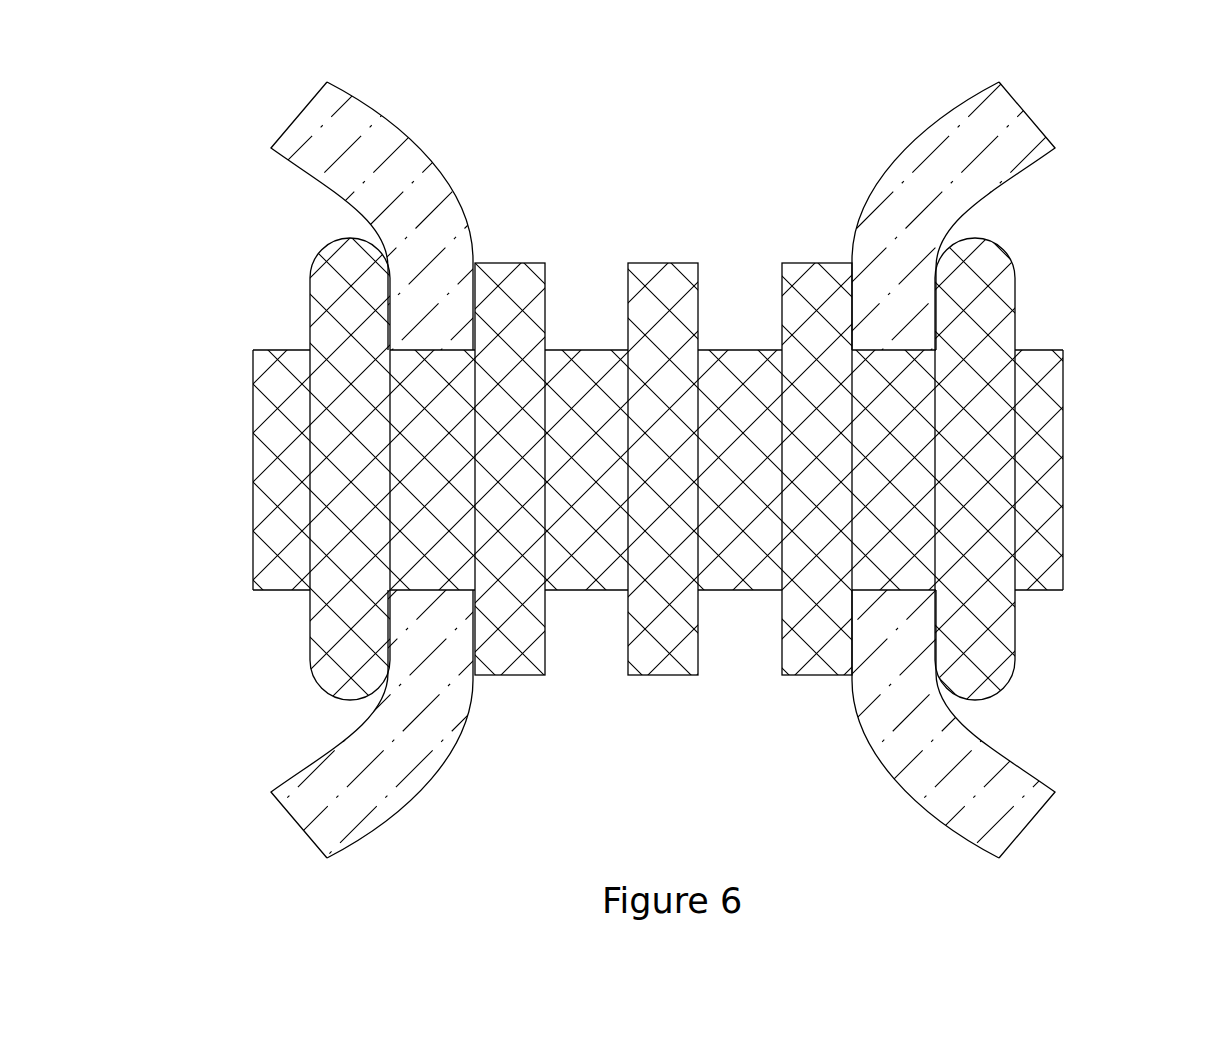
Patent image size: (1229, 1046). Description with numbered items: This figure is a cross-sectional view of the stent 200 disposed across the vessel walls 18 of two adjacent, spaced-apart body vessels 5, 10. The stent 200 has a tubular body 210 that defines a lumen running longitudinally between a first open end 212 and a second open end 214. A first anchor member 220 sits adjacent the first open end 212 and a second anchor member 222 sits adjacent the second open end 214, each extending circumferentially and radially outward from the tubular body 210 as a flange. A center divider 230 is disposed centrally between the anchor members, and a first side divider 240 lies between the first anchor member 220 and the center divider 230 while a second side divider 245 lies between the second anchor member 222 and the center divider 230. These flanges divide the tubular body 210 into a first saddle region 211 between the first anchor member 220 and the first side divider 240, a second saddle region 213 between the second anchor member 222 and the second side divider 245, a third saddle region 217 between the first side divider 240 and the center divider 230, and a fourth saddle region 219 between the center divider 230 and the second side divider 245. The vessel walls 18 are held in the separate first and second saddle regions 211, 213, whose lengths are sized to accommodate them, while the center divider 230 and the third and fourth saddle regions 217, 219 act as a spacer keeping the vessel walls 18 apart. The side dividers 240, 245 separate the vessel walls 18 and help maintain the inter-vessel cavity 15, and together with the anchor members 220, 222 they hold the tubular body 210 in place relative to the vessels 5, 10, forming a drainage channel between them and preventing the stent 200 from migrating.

The stent 200 is at (1130, 212).
The tubular body 210 is at (253, 407).
The first saddle region 211 is at (440, 592).
The first open end 212 is at (253, 537).
The second saddle region 213 is at (885, 592).
The second open end 214 is at (1063, 530).
The third saddle region 217 is at (585, 350).
The fourth saddle region 219 is at (737, 350).
The first anchor member 220 is at (328, 690).
The second anchor member 222 is at (995, 693).
The center divider 230 is at (682, 677).
The first side divider 240 is at (508, 677).
The second side divider 245 is at (815, 677).
The vessel walls 18 is at (313, 165).
The vessel 5 is at (134, 480).
The vessel 10 is at (1157, 472).
The inter-vessel cavity 15 is at (682, 108).